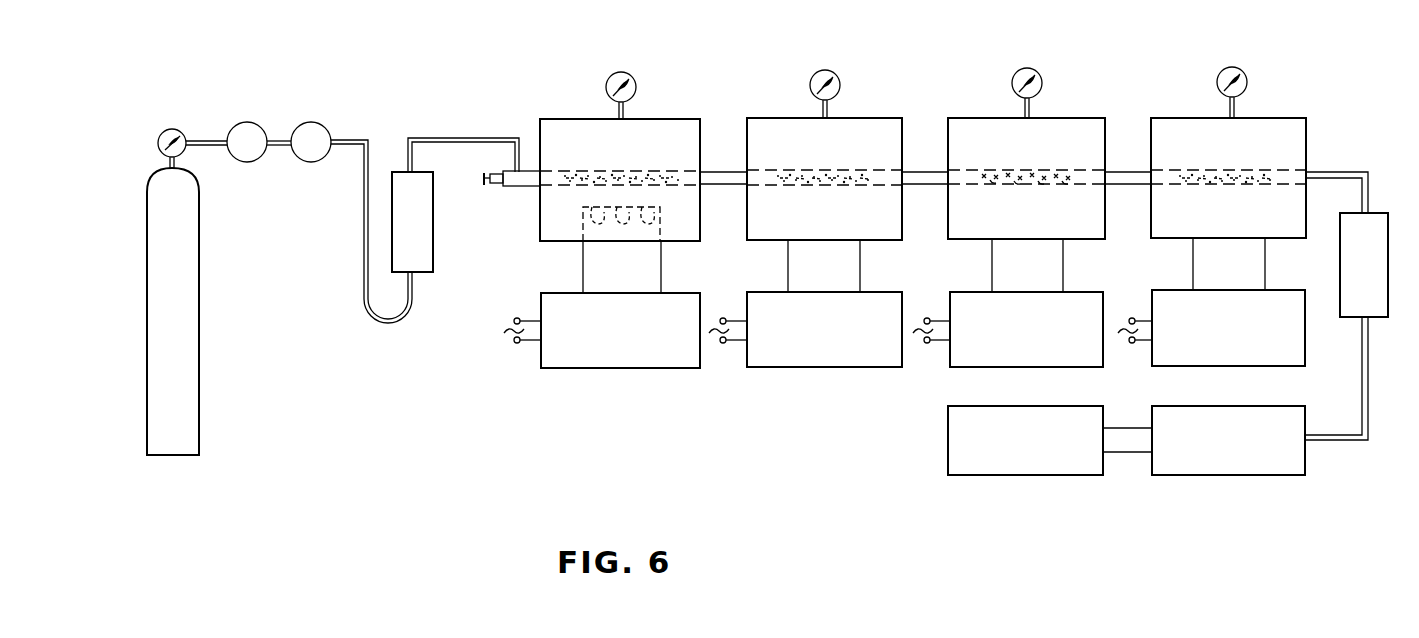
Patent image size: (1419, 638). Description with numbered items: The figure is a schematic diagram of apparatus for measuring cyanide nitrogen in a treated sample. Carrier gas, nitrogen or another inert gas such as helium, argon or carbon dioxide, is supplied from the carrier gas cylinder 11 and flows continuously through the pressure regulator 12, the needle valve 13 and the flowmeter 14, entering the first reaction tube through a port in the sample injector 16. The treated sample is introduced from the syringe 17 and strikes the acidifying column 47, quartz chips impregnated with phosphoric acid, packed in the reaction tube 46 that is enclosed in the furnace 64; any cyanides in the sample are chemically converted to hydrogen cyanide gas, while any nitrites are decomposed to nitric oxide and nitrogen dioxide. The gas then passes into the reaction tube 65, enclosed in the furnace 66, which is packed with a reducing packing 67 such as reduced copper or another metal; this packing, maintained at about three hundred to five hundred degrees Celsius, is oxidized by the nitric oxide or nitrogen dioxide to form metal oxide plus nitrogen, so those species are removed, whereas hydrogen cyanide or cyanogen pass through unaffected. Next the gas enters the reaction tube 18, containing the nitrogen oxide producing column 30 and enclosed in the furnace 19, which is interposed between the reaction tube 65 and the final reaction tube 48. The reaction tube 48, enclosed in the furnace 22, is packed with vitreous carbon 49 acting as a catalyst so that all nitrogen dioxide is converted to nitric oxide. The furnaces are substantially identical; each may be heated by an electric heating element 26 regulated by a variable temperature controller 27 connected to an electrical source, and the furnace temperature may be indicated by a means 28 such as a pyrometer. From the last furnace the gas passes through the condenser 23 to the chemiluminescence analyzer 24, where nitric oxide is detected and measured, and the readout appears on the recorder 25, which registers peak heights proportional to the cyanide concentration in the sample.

The carrier gas cylinder 11 is at (199, 355).
The pressure regulator 12 is at (247, 122).
The needle valve 13 is at (318, 123).
The flowmeter 14 is at (433, 262).
The sample injector 16 is at (525, 189).
The syringe 17 is at (495, 187).
The reaction tube 18 is at (1050, 172).
The furnace 19 is at (1045, 160).
The furnace 22 is at (1253, 160).
The condenser 23 is at (1378, 212).
The chemiluminescence analyzer 24 is at (1258, 405).
The recorder 25 is at (1055, 405).
The electric heating element 26 is at (610, 230).
The variable temperature controller 27 is at (675, 295).
The temperature indicating means 28 is at (633, 75).
The nitrogen oxide producing column 30 is at (983, 172).
The reaction tube 46 is at (652, 170).
The acidifying column 47 is at (578, 178).
The reaction tube 48 is at (1258, 170).
The vitreous carbon 49 is at (1185, 174).
The furnace 64 is at (640, 161).
The reaction tube 65 is at (784, 180).
The furnace 66 is at (845, 161).
The reducing packing 67 is at (845, 172).